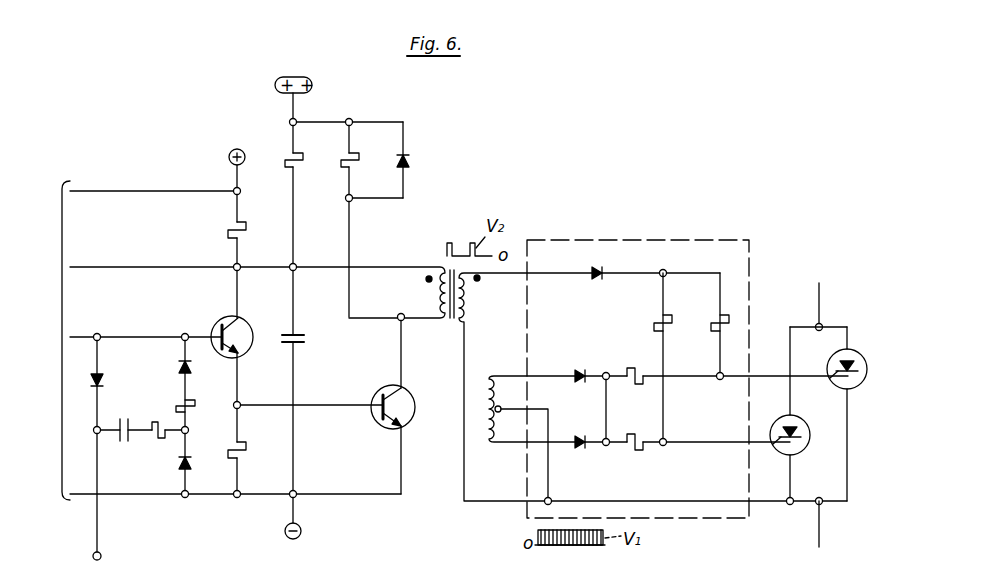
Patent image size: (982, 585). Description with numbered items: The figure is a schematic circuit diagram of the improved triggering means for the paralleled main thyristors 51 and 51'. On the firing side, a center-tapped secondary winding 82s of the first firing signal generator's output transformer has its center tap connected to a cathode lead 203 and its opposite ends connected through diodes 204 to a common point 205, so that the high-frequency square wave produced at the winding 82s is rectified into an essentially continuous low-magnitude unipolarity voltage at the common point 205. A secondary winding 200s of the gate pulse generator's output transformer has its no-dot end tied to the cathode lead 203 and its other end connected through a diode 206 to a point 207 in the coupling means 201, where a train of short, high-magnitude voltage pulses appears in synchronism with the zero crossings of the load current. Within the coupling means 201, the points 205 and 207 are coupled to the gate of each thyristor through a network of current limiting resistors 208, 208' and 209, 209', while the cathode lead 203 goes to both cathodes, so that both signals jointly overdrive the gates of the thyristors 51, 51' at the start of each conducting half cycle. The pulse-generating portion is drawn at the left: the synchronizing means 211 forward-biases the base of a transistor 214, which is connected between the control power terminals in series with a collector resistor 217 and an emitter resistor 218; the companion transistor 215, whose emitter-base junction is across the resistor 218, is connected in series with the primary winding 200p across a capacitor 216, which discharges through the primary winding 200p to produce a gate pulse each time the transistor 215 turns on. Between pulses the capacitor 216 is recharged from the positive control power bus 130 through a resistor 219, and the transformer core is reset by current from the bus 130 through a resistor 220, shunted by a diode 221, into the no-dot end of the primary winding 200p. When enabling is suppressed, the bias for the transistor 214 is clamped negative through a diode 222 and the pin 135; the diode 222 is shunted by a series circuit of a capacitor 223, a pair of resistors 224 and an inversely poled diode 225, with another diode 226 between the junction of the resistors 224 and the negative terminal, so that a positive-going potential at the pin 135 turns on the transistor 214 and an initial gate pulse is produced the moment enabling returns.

The synchronizing means 211 is at (60, 333).
The collector resistor 217 is at (228, 232).
The transistor 214 is at (217, 320).
The emitter resistor 218 is at (247, 458).
The diode 222 is at (104, 382).
The capacitor 223 is at (124, 442).
The pair of resistors 224 is at (175, 406).
The inversely poled diode 225 is at (193, 367).
The diode 226 is at (193, 463).
The pin 135 is at (101, 558).
The positive control power bus 130 is at (378, 121).
The resistor 219 is at (304, 161).
The resistor 220 is at (360, 161).
The diode 221 is at (411, 161).
The capacitor 216 is at (306, 338).
The transistor 215 is at (380, 423).
The primary winding 200p is at (432, 294).
The secondary winding 200s is at (470, 307).
The coupling means 201 is at (703, 240).
The diode 206 is at (597, 281).
The point 207 is at (662, 271).
The current limiting resistor 209 is at (640, 357).
The current limiting resistor 209' is at (703, 325).
The secondary winding 82s is at (490, 447).
The diodes 204 is at (580, 384).
The common point 205 is at (607, 372).
The current limiting resistor 208' is at (636, 397).
The current limiting resistor 208 is at (636, 463).
The cathode lead 203 is at (707, 499).
The main thyristor 51' is at (858, 383).
The main thyristor 51 is at (803, 448).